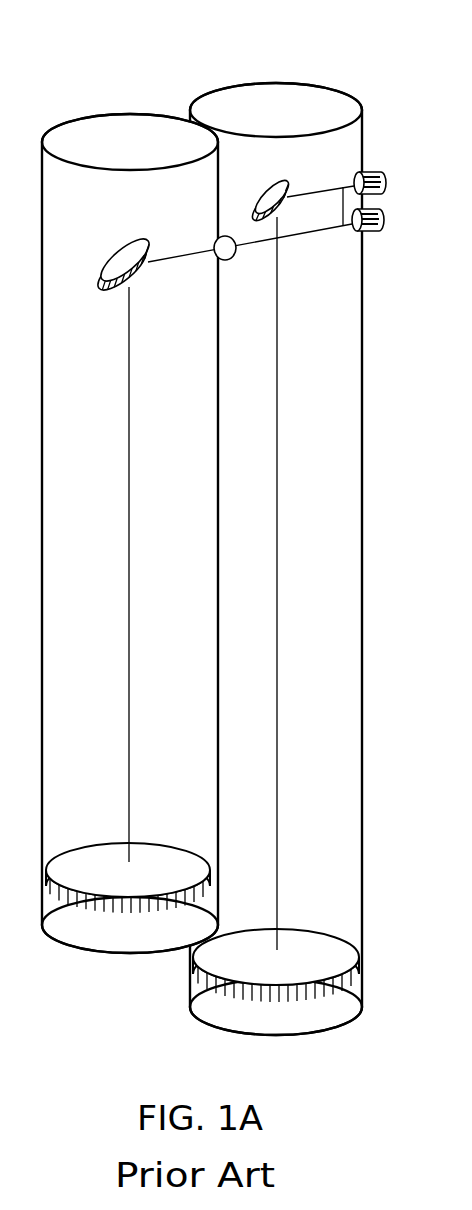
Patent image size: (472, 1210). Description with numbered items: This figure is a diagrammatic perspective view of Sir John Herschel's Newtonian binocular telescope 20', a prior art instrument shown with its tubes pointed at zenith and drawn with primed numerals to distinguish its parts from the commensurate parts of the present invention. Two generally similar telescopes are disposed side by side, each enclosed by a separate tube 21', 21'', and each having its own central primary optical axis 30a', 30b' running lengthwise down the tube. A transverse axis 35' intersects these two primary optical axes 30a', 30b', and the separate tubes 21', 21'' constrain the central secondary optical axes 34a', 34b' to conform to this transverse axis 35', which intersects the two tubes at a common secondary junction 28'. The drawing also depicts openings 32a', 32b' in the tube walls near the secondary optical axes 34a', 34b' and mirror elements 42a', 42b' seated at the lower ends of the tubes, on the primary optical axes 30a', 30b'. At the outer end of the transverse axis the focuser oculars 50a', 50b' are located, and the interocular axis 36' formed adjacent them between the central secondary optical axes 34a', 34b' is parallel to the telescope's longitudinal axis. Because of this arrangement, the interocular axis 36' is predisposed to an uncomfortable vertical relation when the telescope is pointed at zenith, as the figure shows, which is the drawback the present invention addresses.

The prior art cable tensioning system 20' is at (365, 50).
The tube 21' is at (312, 598).
The tube 21'' is at (116, 570).
The common secondary junction 28' is at (241, 287).
The central primary optical axis 30a' is at (315, 583).
The central primary optical axis 30b' is at (94, 574).
The first opening 32a' is at (218, 207).
The second opening 32b' is at (75, 228).
The central secondary optical axis 34a' is at (283, 188).
The central secondary optical axis 34b' is at (141, 270).
The transverse axis 35' is at (251, 262).
The interocular axis 36' is at (315, 210).
The first weight 42a' is at (276, 940).
The second weight 42b' is at (128, 857).
The focuser ocular 50a' is at (393, 170).
The focuser ocular 50b' is at (397, 239).